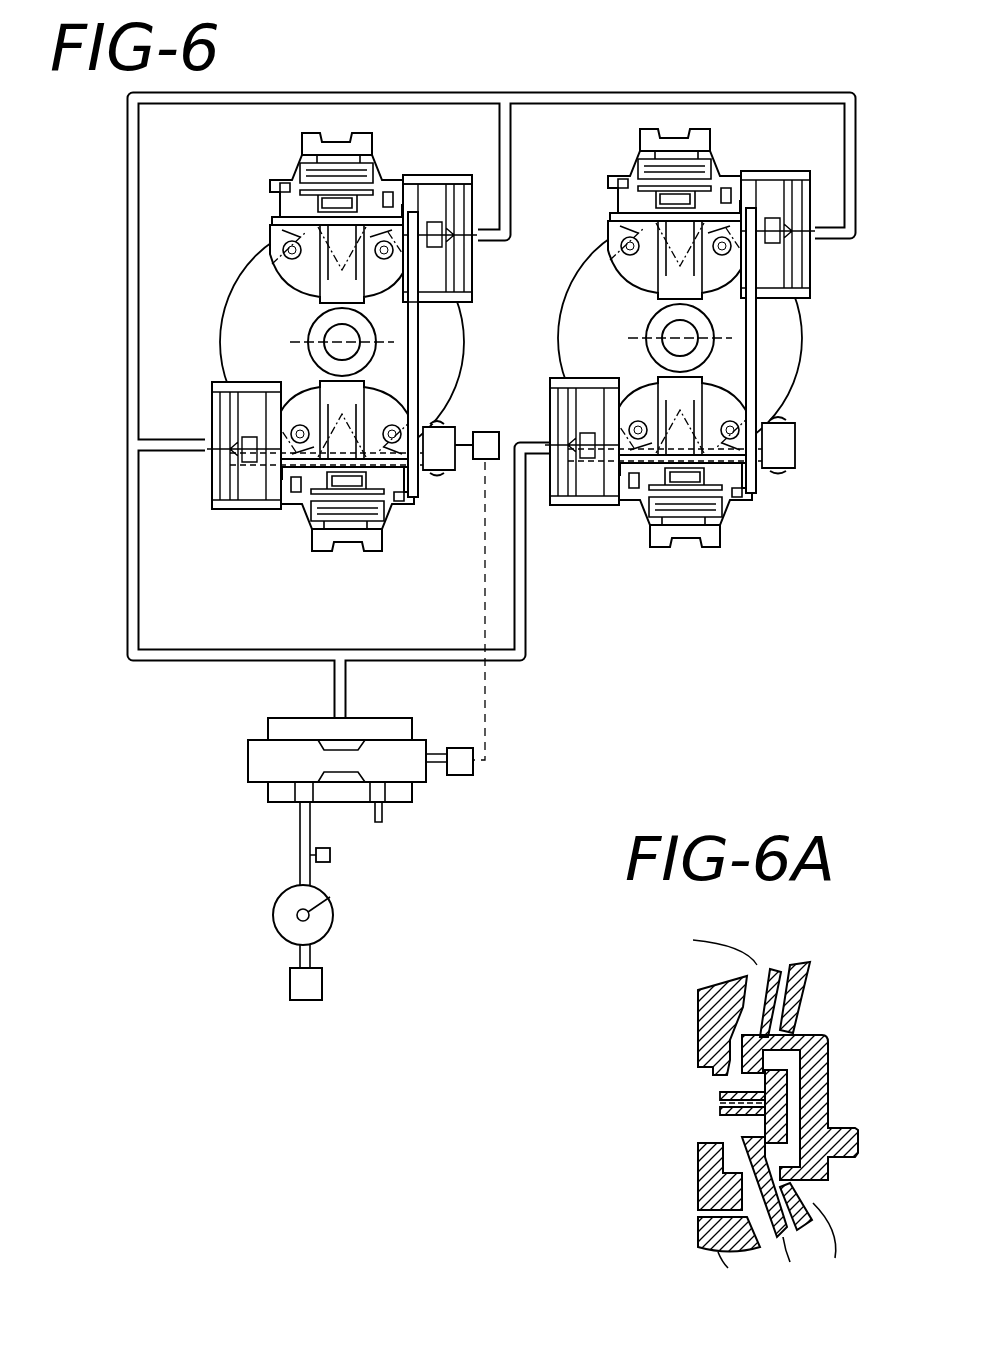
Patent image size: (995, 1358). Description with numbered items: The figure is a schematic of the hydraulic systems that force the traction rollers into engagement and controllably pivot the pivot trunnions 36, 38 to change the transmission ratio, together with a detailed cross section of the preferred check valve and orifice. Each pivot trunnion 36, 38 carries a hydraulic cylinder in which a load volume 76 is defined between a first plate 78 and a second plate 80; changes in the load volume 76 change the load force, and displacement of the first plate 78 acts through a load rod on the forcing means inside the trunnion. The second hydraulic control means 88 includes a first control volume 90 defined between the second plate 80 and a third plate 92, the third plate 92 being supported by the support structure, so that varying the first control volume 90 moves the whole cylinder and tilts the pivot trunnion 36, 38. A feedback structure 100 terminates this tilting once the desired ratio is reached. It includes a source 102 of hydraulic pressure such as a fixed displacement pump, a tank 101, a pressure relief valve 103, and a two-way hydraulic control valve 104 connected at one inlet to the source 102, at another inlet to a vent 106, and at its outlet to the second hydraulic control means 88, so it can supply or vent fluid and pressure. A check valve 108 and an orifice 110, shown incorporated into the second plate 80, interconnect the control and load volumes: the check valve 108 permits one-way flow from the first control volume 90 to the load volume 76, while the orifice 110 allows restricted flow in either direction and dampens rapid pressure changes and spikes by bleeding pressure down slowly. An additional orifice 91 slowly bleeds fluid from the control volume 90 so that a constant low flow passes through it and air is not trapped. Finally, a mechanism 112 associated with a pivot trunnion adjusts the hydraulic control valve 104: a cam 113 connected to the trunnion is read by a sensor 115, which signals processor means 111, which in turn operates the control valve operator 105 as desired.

In FIG. 6, the pivot trunnion 36 is at (265, 232).
In FIG. 6, the pivot trunnion 38 is at (410, 440).
In FIG. 6A, the load volume 76 is at (805, 1033).
In FIG. 6A, the first plate 78 is at (815, 1235).
In FIG. 6A, the second plate 80 is at (778, 1242).
In FIG. 6, the second hydraulic control means 88 is at (470, 268).
In FIG. 6A, the first control volume 90 is at (716, 978).
In FIG. 6, the additional orifice 91 is at (478, 200).
In FIG. 6A, the additional orifice 91 is at (698, 1210).
In FIG. 6A, the third plate 92 is at (722, 1250).
In FIG. 6, the feedback structure 100 is at (545, 688).
In FIG. 6, the tank 101 is at (323, 985).
In FIG. 6, the source of hydraulic pressure 102 is at (334, 912).
In FIG. 6, the pressure relief valve 103 is at (332, 856).
In FIG. 6, the hydraulic control valve 104 is at (247, 768).
In FIG. 6, the control valve operator 105 is at (437, 750).
In FIG. 6, the vent 106 is at (379, 823).
In FIG. 6A, the check valve 108 is at (718, 1098).
In FIG. 6A, the orifice 110 is at (716, 1108).
In FIG. 6, the processor means 111 is at (462, 776).
In FIG. 6, the mechanism 112 is at (458, 482).
In FIG. 6, the cam 113 is at (458, 438).
In FIG. 6, the sensor 115 is at (488, 432).